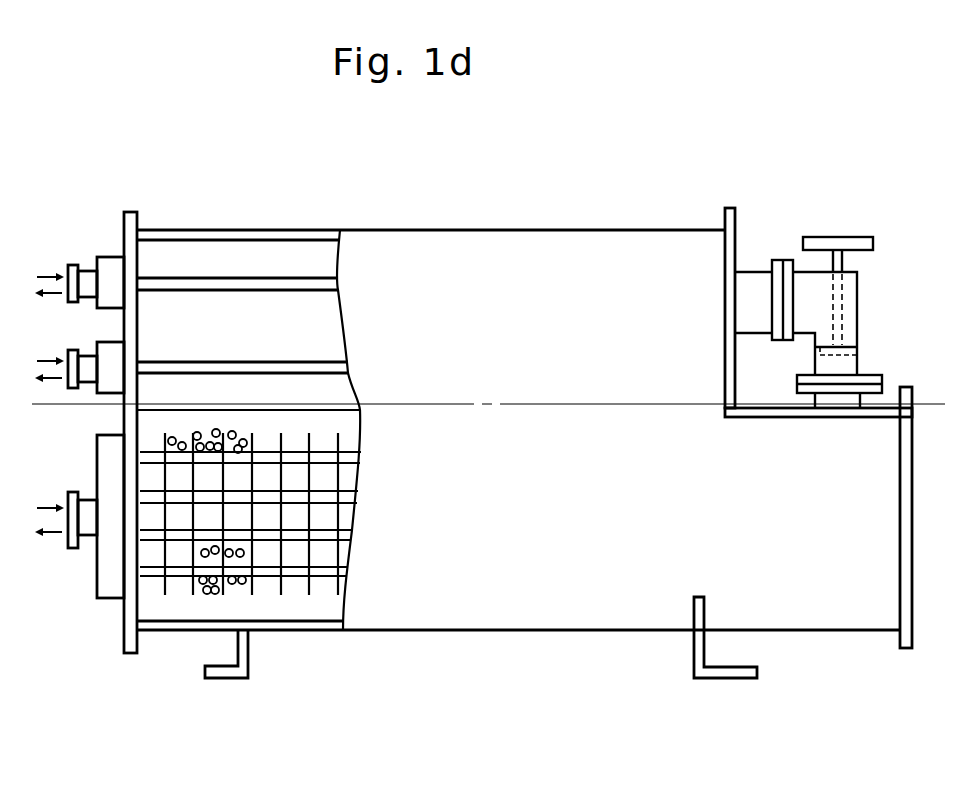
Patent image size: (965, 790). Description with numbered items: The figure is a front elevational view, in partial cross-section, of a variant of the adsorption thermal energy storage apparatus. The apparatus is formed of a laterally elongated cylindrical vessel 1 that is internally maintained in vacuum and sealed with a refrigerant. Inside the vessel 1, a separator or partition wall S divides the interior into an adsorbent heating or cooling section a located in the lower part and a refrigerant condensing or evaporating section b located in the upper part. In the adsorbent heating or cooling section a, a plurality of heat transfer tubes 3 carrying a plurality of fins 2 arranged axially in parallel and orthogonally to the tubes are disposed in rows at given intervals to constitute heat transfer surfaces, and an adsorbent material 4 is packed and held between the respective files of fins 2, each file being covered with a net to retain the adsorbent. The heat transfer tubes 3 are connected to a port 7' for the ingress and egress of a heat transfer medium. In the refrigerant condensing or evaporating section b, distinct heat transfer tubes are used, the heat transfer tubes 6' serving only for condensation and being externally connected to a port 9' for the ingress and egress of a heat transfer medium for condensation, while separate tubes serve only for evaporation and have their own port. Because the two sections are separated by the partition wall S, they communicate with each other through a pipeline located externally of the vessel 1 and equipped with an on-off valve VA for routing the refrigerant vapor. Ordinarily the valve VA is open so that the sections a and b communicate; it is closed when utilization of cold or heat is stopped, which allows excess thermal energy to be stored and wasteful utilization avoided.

The cylindrical vessel 1 is at (442, 230).
The fins 2 is at (327, 577).
The heat transfer tubes 3 is at (163, 550).
The adsorbent material 4 is at (252, 588).
The heat transfer tubes for condensation 6' is at (237, 226).
The port 7' is at (63, 516).
The port 9' is at (63, 282).
The adsorbent heating or cooling section a is at (182, 612).
The refrigerant condensing or evaporating section b is at (293, 253).
The separator or partition wall S is at (160, 410).
The on-off valve VA is at (860, 307).